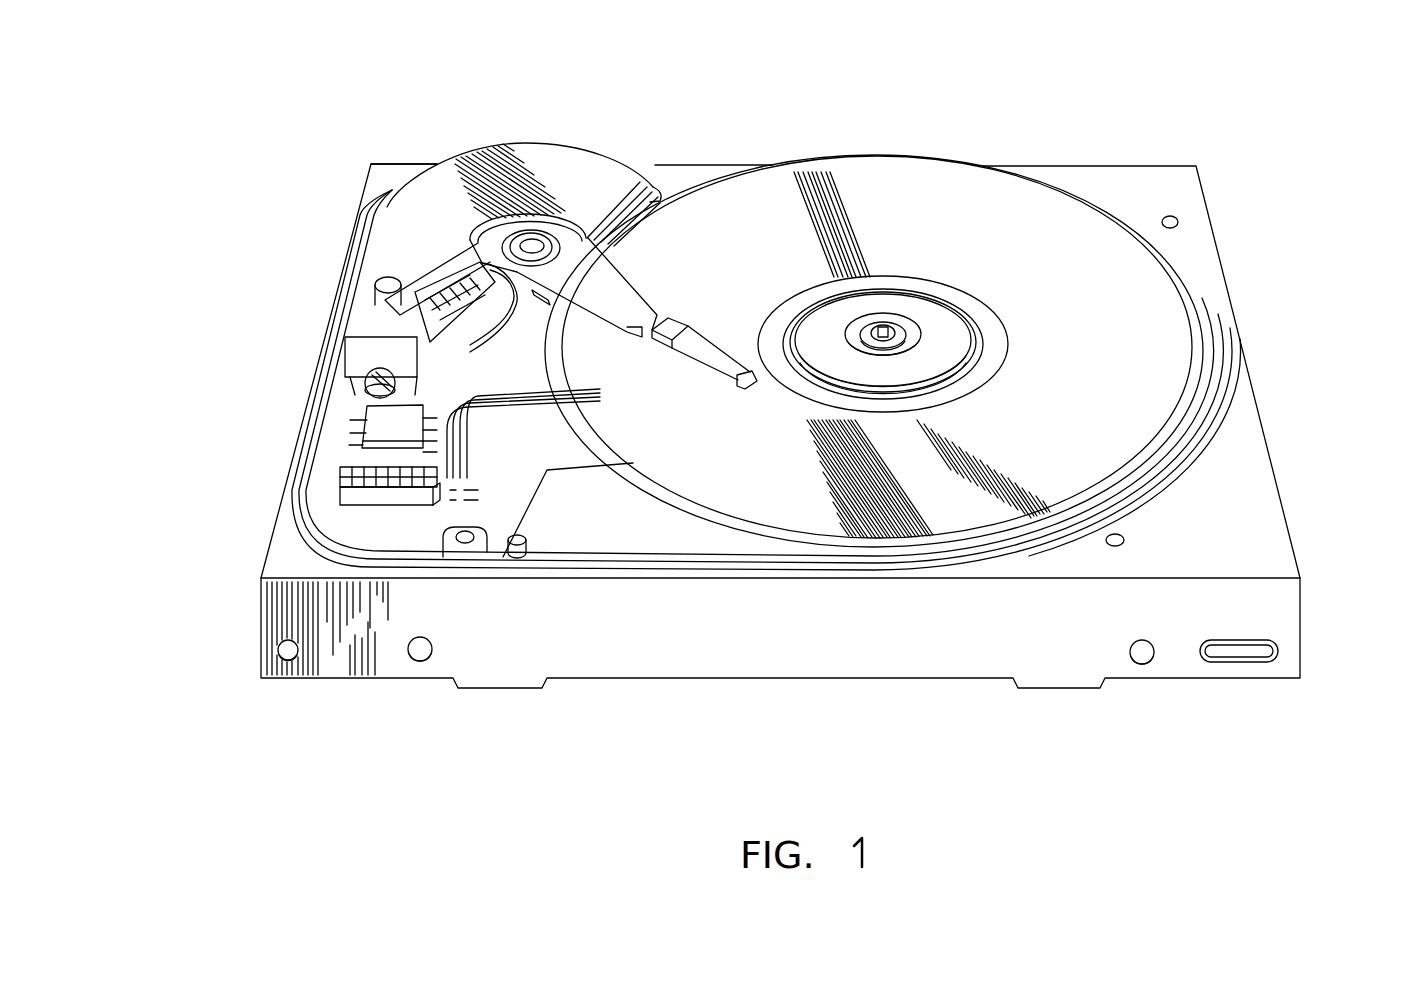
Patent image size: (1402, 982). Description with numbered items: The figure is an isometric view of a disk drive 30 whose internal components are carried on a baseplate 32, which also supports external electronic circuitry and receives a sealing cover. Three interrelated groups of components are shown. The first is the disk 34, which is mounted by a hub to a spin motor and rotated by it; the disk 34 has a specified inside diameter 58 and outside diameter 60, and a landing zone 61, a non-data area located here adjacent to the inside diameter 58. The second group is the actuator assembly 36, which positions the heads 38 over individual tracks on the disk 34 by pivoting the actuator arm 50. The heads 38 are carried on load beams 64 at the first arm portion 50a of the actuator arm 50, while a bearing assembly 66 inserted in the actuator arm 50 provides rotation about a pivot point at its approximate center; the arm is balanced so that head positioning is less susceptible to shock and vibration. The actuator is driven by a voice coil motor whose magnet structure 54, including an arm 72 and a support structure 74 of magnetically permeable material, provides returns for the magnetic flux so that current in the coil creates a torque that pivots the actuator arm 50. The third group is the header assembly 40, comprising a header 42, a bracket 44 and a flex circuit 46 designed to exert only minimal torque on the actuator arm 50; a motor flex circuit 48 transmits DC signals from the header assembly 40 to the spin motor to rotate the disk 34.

The disk drive 30 is at (812, 127).
The baseplate 32 is at (1232, 510).
The disk 34 is at (978, 180).
The actuator assembly 36 is at (533, 163).
The head 38 is at (742, 392).
The header assembly 40 is at (350, 431).
The header 42 is at (353, 495).
The bracket 44 is at (372, 383).
The flex circuit 46 is at (490, 360).
The motor flex circuit 48 is at (512, 424).
The actuator arm 50 is at (600, 278).
The first arm portion 50a is at (674, 314).
The magnet structure 54 is at (432, 203).
The inside diameter 58 is at (1005, 370).
The outside diameter 60 is at (633, 463).
The landing zone 61 is at (944, 284).
The load beam 64 is at (690, 345).
The bearing assembly 66 is at (565, 240).
The arm 72 is at (656, 196).
The support structure 74 is at (412, 330).